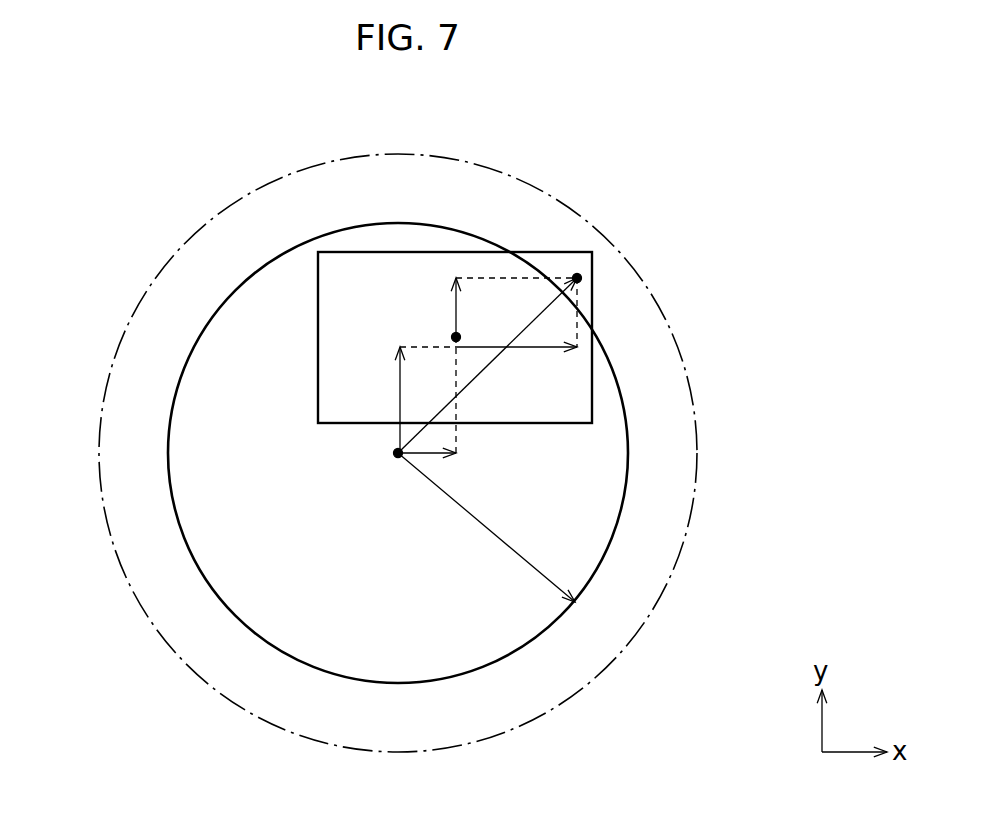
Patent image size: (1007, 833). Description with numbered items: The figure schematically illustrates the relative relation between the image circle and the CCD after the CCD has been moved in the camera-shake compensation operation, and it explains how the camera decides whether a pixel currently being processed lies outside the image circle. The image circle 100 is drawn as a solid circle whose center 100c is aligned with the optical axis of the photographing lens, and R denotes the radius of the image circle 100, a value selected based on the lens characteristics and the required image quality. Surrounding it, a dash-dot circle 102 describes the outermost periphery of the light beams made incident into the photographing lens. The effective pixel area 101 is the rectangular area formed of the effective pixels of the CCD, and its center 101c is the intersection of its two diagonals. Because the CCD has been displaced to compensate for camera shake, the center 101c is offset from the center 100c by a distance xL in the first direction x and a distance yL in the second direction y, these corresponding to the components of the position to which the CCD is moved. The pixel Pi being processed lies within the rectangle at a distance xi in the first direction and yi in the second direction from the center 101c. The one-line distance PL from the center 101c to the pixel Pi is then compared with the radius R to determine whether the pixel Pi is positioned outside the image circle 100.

The image circle 100 is at (622, 520).
The center of the image circle 100c is at (398, 454).
The effective pixel area 101 is at (318, 384).
The center of the effective pixel area 101c is at (452, 337).
The circle 102 is at (615, 657).
The pixel Pi is at (577, 275).
The one-line distance PL is at (482, 374).
The radius of the image circle R is at (486, 527).
The distance in the first direction x xL is at (423, 458).
The distance in the second direction y yL is at (381, 400).
The distance in the first direction x xi is at (488, 328).
The distance in the second direction y yi is at (498, 307).